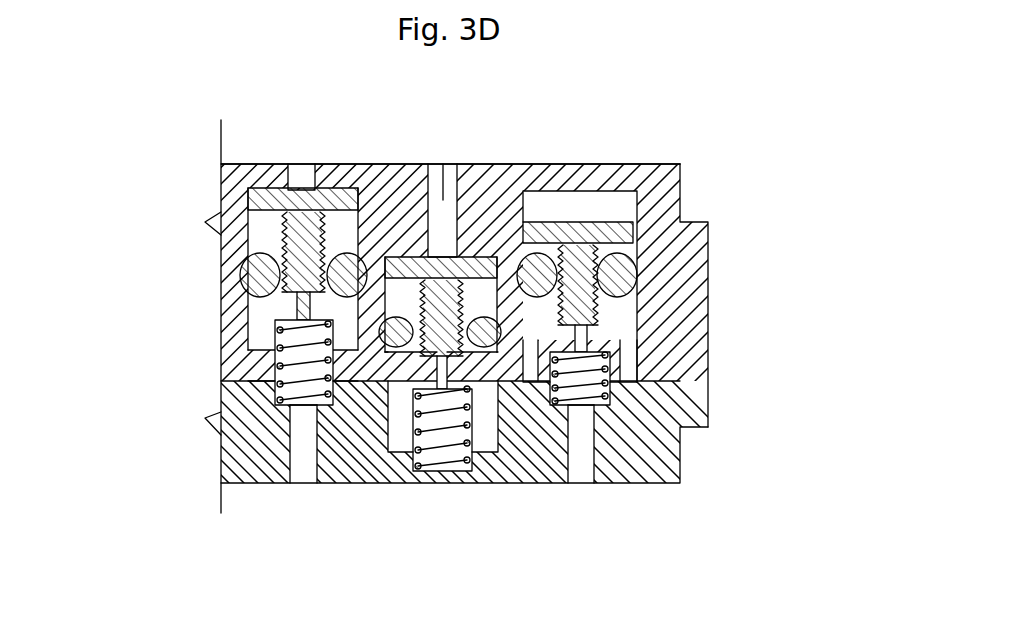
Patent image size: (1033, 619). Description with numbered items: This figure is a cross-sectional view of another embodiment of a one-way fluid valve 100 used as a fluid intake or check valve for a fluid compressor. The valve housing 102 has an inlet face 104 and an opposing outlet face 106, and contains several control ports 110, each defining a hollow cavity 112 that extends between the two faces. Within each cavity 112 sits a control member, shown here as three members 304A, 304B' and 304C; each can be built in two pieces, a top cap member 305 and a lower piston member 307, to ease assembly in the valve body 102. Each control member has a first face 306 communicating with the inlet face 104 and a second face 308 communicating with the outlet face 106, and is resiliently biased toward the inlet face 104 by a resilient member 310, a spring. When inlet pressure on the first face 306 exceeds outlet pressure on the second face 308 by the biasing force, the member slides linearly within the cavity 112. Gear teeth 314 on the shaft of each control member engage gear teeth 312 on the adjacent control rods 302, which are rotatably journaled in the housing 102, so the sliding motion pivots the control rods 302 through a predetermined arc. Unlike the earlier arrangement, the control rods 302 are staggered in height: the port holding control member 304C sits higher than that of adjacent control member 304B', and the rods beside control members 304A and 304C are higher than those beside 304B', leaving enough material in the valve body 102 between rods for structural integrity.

The one-way fluid valve 100 is at (189, 102).
The valve housing 102 is at (708, 242).
The inlet face 104 is at (656, 164).
The outlet face 106 is at (660, 483).
The control port 110 is at (300, 164).
The cavity 112 is at (500, 164).
The control rod 302 is at (347, 164).
The control member 304A is at (640, 371).
The control member 304B' is at (487, 465).
The control member 304C is at (295, 426).
The top cap member 305 is at (365, 164).
The first face 306 is at (297, 164).
The lower piston member 307 is at (640, 381).
The second face 308 is at (640, 424).
The resilient member 310 is at (302, 486).
The gear teeth 312 is at (547, 164).
The gear teeth 314 is at (477, 164).